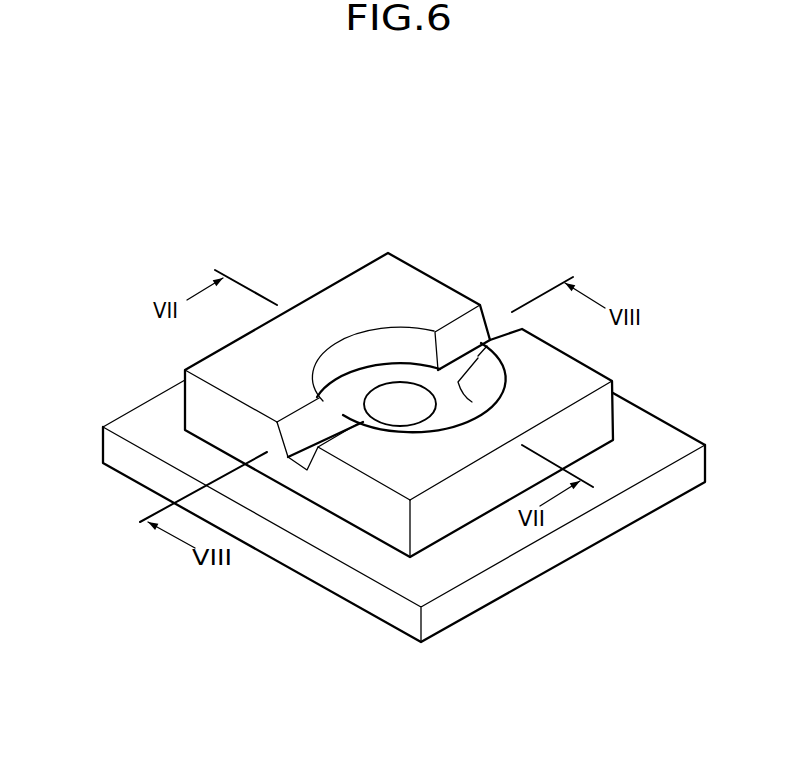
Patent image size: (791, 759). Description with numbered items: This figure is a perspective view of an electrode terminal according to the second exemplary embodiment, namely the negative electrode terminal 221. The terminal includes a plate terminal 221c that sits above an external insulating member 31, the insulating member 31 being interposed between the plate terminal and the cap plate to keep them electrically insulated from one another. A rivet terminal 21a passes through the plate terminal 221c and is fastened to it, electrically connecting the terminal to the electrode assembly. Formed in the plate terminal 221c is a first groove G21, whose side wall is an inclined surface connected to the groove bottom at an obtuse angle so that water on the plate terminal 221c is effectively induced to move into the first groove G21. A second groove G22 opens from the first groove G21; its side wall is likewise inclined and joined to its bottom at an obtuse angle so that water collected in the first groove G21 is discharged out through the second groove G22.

The external insulating member 31 is at (545, 562).
The negative electrode terminal 221 is at (363, 222).
The plate terminal 221c is at (570, 378).
The second groove G22 is at (308, 423).
The first groove G21 is at (373, 350).
The rivet terminal 21a is at (399, 398).